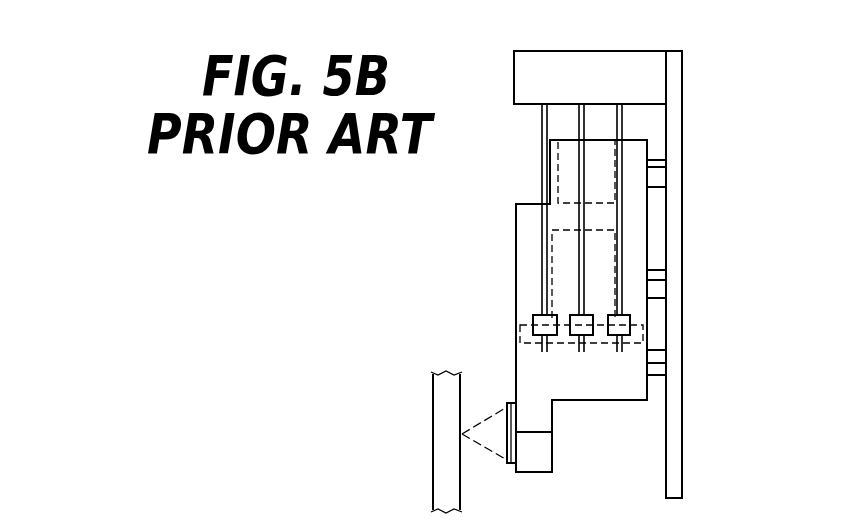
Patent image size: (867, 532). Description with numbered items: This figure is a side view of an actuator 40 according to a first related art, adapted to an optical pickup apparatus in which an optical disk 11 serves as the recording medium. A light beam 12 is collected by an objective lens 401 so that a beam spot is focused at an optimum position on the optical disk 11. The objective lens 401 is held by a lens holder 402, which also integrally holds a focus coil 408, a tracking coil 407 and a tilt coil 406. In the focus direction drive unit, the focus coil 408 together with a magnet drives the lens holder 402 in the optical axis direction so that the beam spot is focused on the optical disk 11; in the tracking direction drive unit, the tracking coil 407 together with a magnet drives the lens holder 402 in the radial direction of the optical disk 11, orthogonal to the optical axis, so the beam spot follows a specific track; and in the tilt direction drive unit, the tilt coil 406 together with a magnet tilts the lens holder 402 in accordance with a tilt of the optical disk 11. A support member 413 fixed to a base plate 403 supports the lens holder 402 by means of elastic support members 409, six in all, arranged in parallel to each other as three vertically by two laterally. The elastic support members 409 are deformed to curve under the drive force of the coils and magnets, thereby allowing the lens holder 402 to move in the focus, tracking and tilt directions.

The optical disk 11 is at (443, 395).
The light beam 12 is at (494, 420).
The actuator 40 is at (648, 41).
The objective lens 401 is at (512, 457).
The lens holder 402 is at (595, 390).
The base plate 403 is at (673, 477).
The tilt coil 406 is at (563, 172).
The tracking coil 407 is at (558, 338).
The focus coil 408 is at (558, 258).
The elastic support members 409 is at (619, 119).
The support member 413 is at (537, 62).